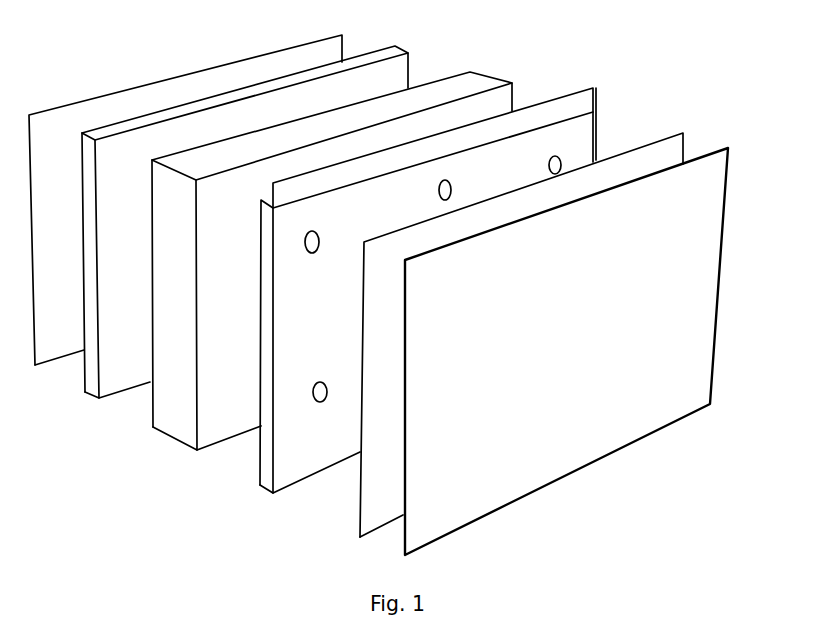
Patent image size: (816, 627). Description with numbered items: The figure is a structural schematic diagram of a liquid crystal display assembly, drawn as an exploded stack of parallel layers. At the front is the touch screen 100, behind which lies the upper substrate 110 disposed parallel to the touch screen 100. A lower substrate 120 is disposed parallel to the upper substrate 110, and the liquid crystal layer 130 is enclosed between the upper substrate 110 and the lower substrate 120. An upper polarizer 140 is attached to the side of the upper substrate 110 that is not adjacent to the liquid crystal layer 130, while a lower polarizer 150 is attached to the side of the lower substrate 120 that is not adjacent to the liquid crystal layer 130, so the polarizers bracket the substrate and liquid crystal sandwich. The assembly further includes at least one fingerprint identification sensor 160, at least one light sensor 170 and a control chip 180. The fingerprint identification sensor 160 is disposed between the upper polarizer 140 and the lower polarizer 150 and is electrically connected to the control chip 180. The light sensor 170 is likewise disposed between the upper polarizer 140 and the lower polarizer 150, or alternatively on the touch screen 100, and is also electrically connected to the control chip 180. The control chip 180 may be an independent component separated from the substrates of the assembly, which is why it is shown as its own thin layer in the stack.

The touch screen 100 is at (595, 351).
The upper substrate 110 is at (464, 300).
The lower substrate 120 is at (281, 212).
The liquid crystal layer 130 is at (366, 249).
The upper polarizer 140 is at (561, 326).
The lower polarizer 150 is at (218, 190).
The fingerprint identification sensor 160 is at (297, 280).
The light sensor 170 is at (306, 429).
The control chip 180 is at (476, 281).